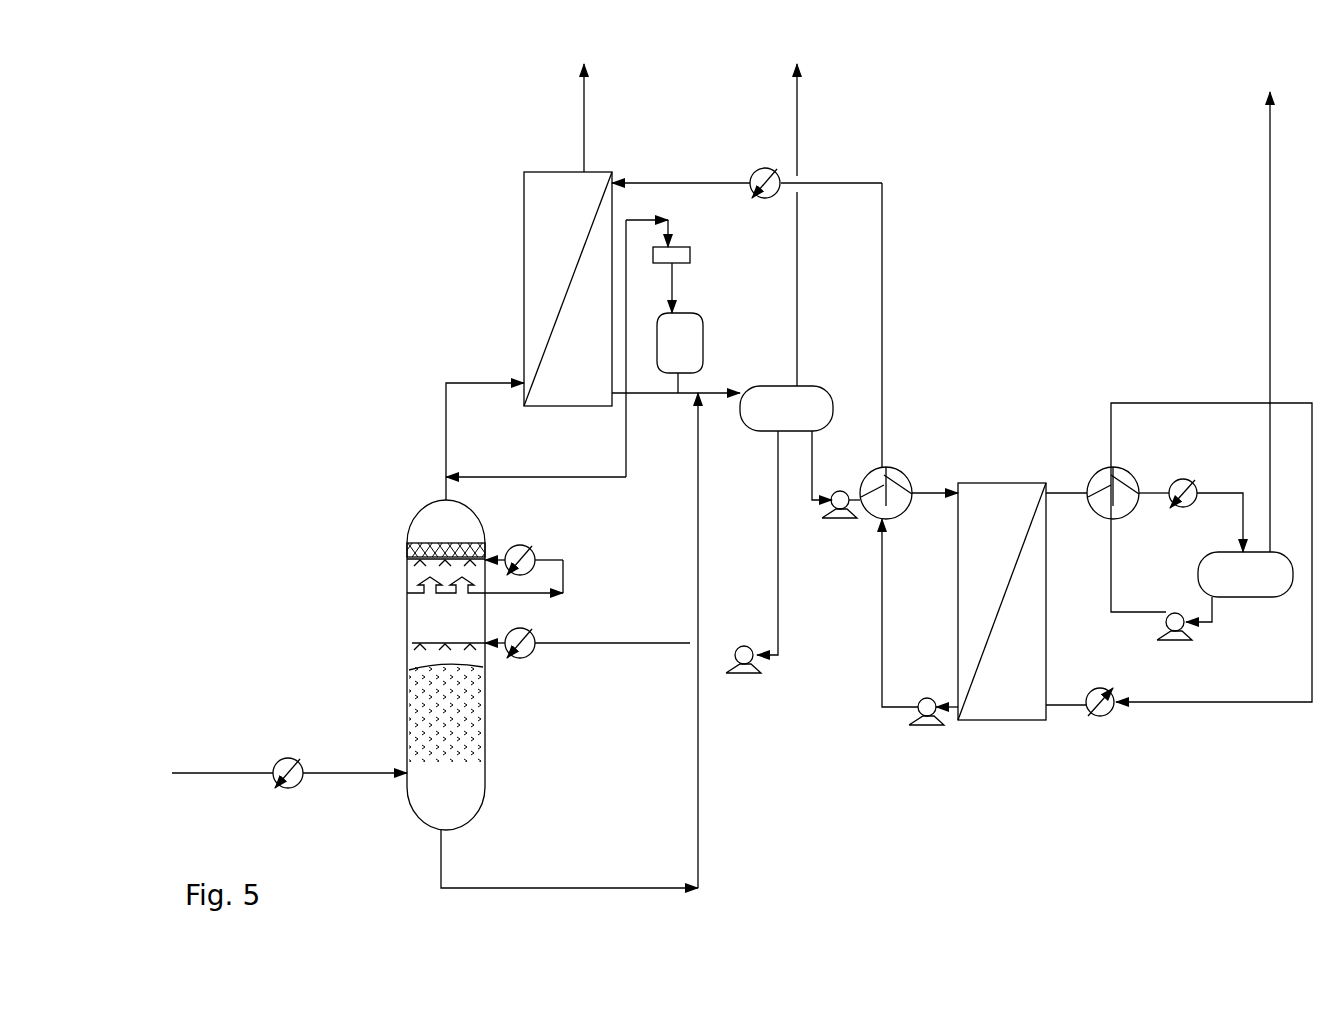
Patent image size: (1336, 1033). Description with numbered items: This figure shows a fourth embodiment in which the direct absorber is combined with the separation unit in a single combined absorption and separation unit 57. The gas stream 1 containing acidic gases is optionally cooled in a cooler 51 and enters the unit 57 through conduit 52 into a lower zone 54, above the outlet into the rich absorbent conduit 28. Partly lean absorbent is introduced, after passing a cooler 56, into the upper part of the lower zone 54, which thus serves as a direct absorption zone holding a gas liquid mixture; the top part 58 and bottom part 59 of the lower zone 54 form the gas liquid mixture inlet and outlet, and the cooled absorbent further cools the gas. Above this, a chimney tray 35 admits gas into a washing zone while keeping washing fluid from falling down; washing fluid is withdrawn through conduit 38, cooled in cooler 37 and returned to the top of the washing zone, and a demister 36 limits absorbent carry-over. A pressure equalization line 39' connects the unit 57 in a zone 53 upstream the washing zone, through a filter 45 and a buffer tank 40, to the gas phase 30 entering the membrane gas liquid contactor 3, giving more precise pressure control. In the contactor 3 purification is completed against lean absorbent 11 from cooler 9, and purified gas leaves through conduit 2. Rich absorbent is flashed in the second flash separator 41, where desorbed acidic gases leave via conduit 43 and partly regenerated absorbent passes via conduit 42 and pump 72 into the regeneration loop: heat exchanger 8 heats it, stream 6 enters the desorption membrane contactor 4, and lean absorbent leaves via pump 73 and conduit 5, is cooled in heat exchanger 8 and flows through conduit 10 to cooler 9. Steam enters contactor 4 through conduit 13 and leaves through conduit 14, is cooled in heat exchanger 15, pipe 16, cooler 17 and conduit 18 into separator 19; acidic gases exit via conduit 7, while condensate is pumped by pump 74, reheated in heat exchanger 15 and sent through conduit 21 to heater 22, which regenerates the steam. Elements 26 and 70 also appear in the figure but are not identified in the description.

The gas stream 1 is at (222, 756).
The conduit 2 is at (567, 118).
The membrane gas liquid contactor 3 is at (568, 305).
The desorption membrane contactor 4 is at (1002, 624).
The conduit 5 is at (888, 613).
The stream 6 is at (935, 472).
The conduit 7 is at (1267, 305).
The heat exchanger 8 is at (882, 484).
The cooler 9 is at (765, 166).
The conduit 10 is at (901, 325).
The stream of liquid absorbent 11 is at (747, 164).
The conduit 13 is at (1065, 690).
The conduit 14 is at (1065, 480).
The heat exchanger 15 is at (1121, 504).
The pipe 16 is at (1153, 480).
The cooler 17 is at (1187, 510).
The conduit 18 is at (1225, 508).
The separator 19 is at (1239, 587).
The conduit 21 is at (1211, 535).
The heater 22 is at (1106, 718).
The wash liquid feed line 26 is at (612, 661).
The rich absorbent conduit 28 is at (569, 661).
The gas phase 30 is at (485, 423).
The chimney tray 35 is at (430, 577).
The demister 36 is at (407, 550).
The cooler 37 is at (524, 548).
The conduit 38 is at (543, 583).
The pressure equalization line 39' is at (557, 367).
The buffer tank 40 is at (699, 350).
The second flash separator 41 is at (722, 408).
The conduit 42 is at (806, 480).
The conduit 43 is at (819, 219).
The filter 45 is at (693, 266).
The cooler 51 is at (288, 756).
The conduit 52 is at (355, 792).
The zone 53 is at (448, 628).
The lower zone 54 is at (446, 714).
The cooler 56 is at (523, 663).
The combined absorption and separation unit 57 is at (460, 668).
The top part of the lower zone 58 is at (448, 667).
The bottom part of the lower zone 59 is at (470, 760).
The pump 70 is at (752, 569).
The pump 72 is at (842, 523).
The pump 73 is at (932, 731).
The pump 74 is at (1175, 642).